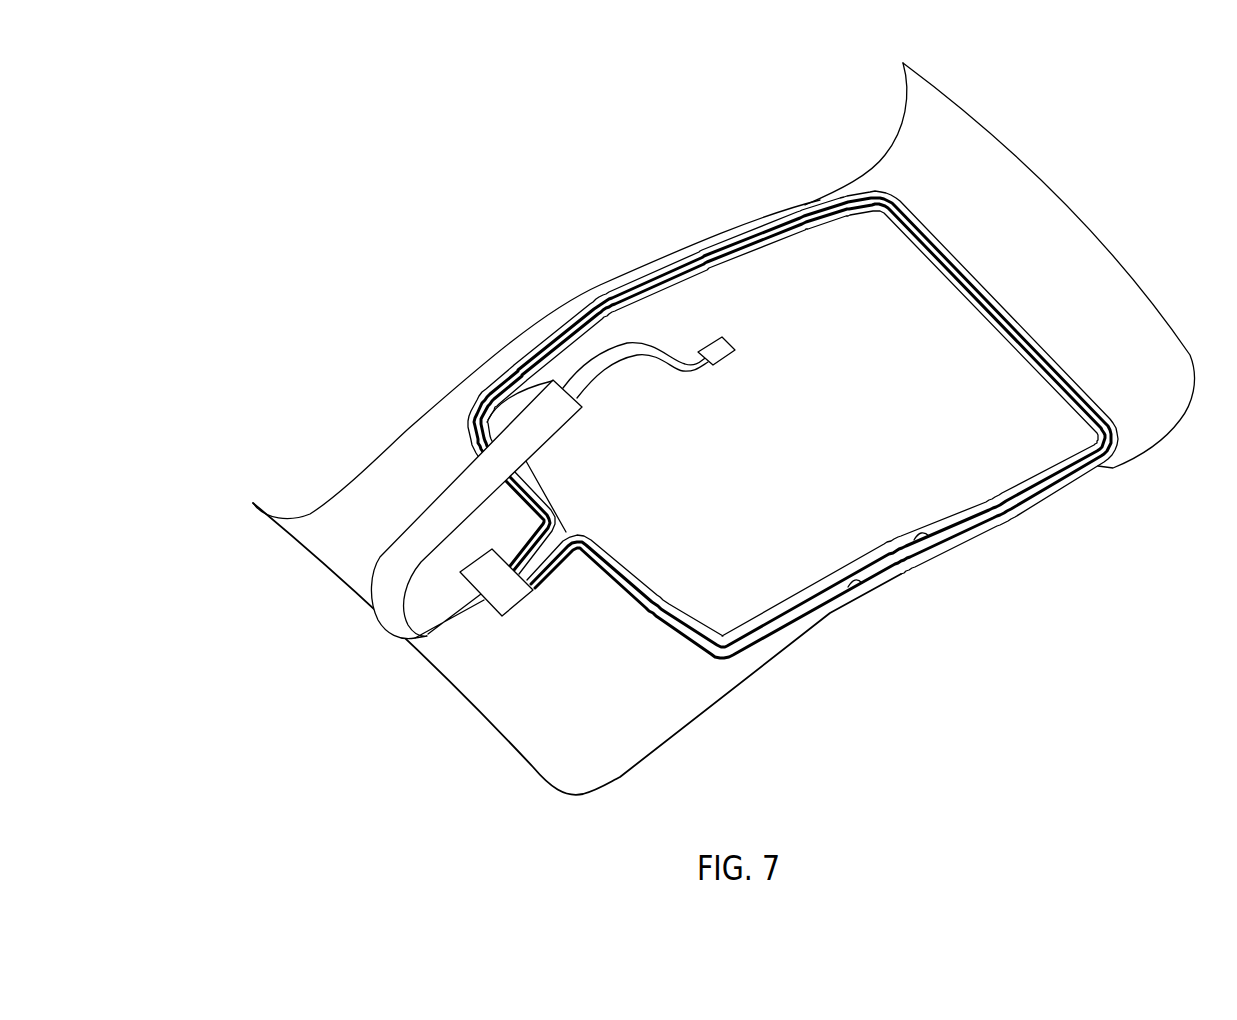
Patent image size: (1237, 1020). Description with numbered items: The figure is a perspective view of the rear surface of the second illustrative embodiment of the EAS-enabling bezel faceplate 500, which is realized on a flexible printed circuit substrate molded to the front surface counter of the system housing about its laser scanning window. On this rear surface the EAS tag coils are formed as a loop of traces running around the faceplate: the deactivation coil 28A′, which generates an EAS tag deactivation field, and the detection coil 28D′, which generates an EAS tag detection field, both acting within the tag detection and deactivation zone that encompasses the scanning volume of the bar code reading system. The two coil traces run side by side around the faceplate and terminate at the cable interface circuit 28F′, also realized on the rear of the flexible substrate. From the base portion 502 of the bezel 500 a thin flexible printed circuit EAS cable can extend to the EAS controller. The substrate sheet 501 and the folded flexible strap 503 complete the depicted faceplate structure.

The EAS-enabling bezel faceplate 500 is at (272, 750).
The flexible substrate panel 501 is at (646, 728).
The base portion 502 is at (704, 270).
The flexible strap / feed cable 503 is at (450, 495).
The cable interface circuit 28F′ is at (512, 597).
The detection coil 28D′ is at (863, 586).
The deactivation coil 28A′ is at (927, 538).